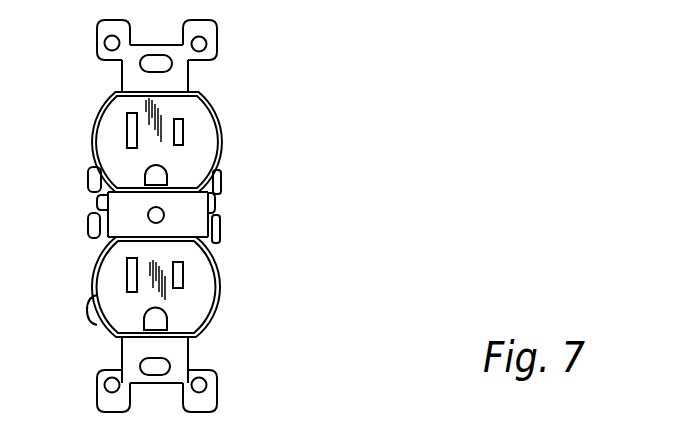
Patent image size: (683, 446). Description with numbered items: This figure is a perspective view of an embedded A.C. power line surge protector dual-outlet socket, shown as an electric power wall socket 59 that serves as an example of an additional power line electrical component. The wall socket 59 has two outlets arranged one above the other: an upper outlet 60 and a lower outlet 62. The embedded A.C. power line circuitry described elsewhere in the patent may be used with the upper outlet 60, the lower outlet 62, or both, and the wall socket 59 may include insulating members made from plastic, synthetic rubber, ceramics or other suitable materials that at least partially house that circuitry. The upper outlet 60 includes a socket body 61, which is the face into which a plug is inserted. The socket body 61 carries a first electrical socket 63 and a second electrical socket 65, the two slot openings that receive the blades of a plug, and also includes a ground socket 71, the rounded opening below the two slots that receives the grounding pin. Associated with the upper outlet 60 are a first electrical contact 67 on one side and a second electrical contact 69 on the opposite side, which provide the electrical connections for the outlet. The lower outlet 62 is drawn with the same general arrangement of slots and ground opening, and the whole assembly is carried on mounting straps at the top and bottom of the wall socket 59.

The electric power wall socket 59 is at (360, 194).
The upper outlet 60 is at (252, 111).
The socket body 61 is at (204, 116).
The lower outlet 62 is at (258, 284).
The first electrical socket 63 is at (127, 119).
The second electrical socket 65 is at (181, 123).
The first electrical contact 67 is at (92, 170).
The second electrical contact 69 is at (218, 190).
The ground socket 71 is at (145, 178).